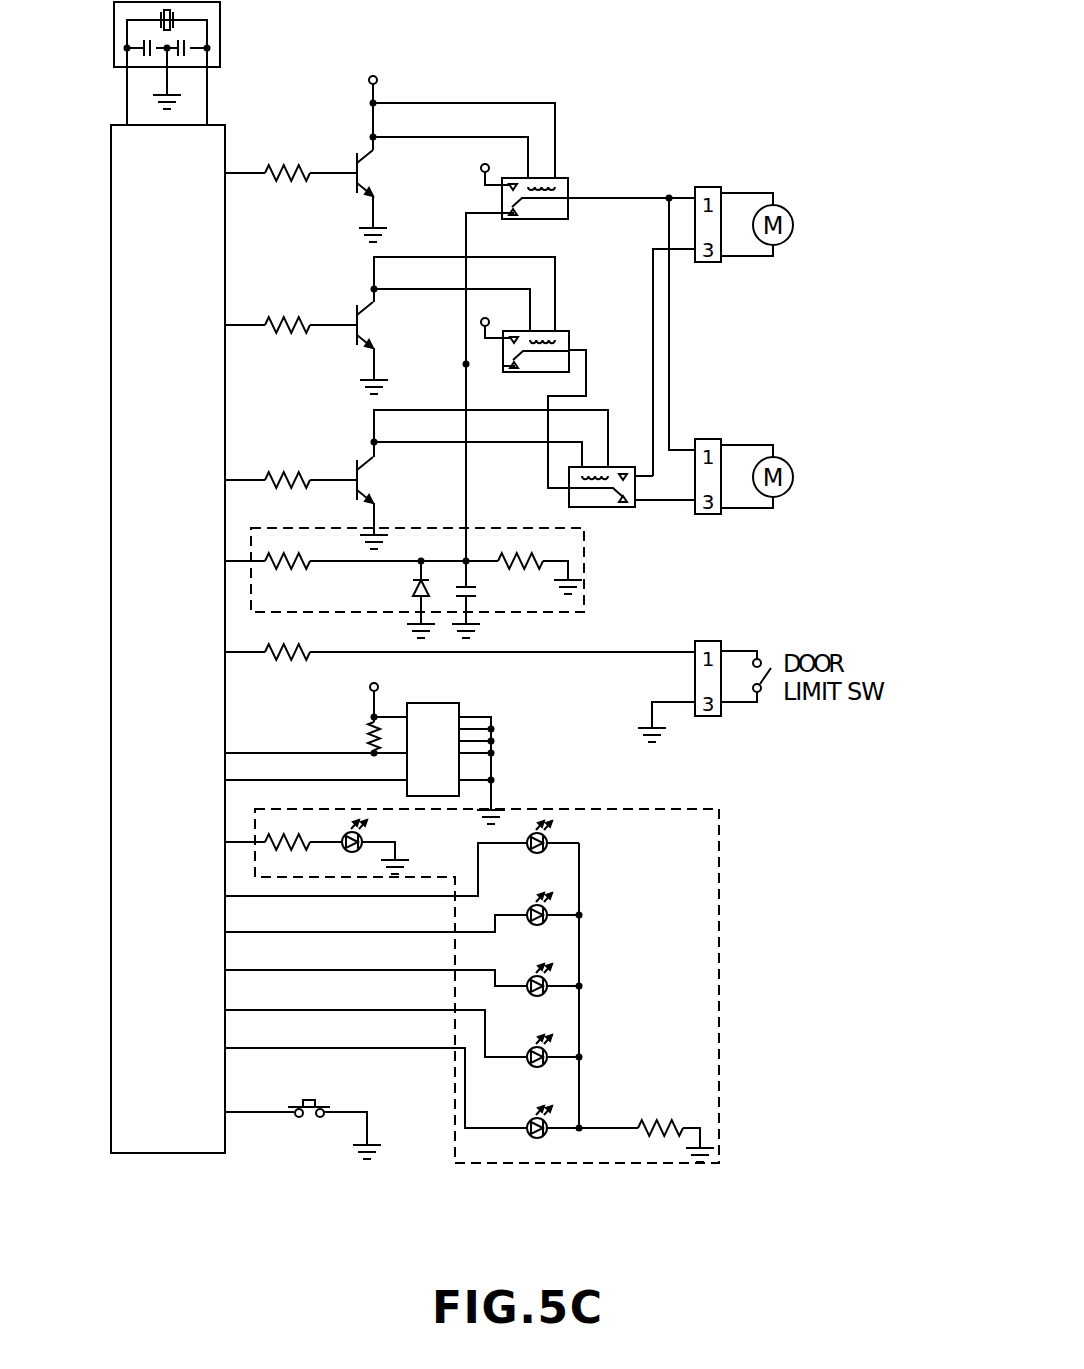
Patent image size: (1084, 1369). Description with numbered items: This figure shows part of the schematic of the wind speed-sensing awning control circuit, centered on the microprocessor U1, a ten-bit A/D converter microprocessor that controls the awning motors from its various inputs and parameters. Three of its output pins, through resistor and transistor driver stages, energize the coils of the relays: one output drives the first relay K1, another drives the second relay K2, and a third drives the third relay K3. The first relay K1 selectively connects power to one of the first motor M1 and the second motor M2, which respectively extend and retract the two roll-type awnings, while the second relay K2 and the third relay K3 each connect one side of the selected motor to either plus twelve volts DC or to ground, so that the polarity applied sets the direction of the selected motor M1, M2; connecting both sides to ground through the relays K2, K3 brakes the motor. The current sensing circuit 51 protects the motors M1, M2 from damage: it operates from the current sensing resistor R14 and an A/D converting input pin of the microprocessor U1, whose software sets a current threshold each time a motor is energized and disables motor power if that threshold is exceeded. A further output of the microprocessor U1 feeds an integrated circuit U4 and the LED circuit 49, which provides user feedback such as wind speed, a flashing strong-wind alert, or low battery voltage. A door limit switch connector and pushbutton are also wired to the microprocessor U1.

The first relay K1 is at (569, 500).
The second relay K2 is at (568, 331).
The third relay K3 is at (568, 178).
The first motor M1 is at (780, 459).
The second motor M2 is at (780, 242).
The current sensing circuit 51 is at (458, 583).
The LED circuit 49 is at (719, 903).
The microprocessor U1 is at (168, 639).
The integrated circuit U4 is at (365, 753).
The current sensing resistor R14 is at (520, 550).